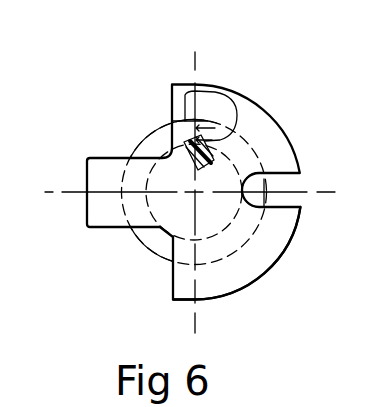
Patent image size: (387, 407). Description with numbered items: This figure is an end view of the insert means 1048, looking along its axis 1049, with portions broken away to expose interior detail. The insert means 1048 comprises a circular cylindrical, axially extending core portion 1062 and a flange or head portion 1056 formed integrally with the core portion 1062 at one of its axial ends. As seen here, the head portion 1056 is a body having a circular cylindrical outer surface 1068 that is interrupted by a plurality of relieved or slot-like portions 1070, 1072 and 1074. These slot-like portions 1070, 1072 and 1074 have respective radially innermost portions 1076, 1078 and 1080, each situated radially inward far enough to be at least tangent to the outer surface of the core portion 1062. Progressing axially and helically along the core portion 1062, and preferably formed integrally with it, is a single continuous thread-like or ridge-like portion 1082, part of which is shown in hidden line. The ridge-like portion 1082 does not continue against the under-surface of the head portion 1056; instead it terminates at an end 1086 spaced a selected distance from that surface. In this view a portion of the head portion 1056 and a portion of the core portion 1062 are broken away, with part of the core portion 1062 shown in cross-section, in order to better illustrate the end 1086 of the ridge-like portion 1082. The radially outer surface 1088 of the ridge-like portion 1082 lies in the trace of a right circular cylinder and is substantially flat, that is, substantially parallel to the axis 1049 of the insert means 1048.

The insert means 1048 is at (301, 94).
The axis 1049 is at (88, 219).
The head portion 1056 is at (220, 300).
The core portion 1062 is at (233, 220).
The outer surface 1068 is at (266, 277).
The slot-like portion 1070 is at (117, 229).
The slot-like portion 1072 is at (123, 157).
The slot-like portion 1074 is at (292, 183).
The radially innermost portion 1076 is at (160, 232).
The radially innermost portion 1078 is at (166, 141).
The radially innermost portion 1080 is at (268, 189).
The thread-like portion 1082 is at (157, 265).
The end of ridge-like portion 1086 is at (173, 86).
The radially outer surface 1088 is at (216, 115).